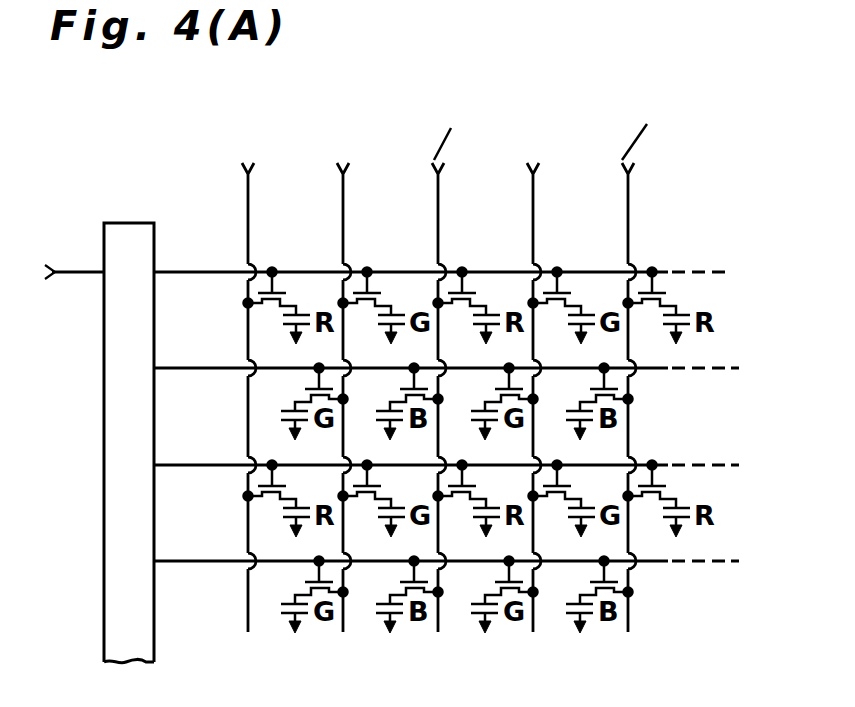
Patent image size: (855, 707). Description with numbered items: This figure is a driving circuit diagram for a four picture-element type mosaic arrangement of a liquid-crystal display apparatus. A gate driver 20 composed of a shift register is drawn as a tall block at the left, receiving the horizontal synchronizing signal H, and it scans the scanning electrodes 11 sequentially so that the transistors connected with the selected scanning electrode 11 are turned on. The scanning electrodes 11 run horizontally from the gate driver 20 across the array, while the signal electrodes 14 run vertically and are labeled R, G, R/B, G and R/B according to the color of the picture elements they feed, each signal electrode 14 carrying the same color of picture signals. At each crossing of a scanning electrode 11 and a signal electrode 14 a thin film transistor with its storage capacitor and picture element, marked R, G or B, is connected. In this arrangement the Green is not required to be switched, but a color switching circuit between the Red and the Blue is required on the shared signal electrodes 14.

The gate driver 20 is at (132, 222).
The scanning electrode 11 is at (192, 272).
The signal electrode 14 is at (248, 220).